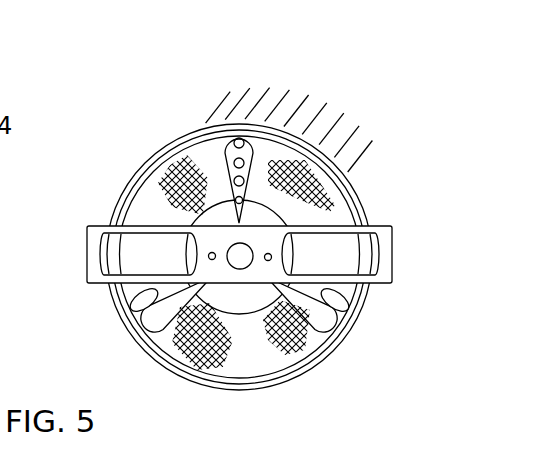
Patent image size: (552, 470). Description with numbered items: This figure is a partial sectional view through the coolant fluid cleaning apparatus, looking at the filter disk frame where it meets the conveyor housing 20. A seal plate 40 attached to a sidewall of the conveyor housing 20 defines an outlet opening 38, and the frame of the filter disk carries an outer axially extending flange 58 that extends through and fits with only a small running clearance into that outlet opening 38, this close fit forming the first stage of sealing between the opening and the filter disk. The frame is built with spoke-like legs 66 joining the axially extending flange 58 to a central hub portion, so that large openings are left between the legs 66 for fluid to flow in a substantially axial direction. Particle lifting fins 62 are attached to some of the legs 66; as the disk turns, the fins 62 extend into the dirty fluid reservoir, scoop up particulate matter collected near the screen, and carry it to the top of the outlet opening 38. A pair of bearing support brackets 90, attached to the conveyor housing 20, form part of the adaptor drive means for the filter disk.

The conveyor housing 20 is at (392, 238).
The outlet opening 38 is at (285, 118).
The seal plate 40 is at (323, 75).
The axially extending flange 58 is at (297, 180).
The particle lifting fins 62 is at (165, 265).
The spoke-like legs 66 is at (217, 164).
The bearing support brackets 90 is at (392, 258).